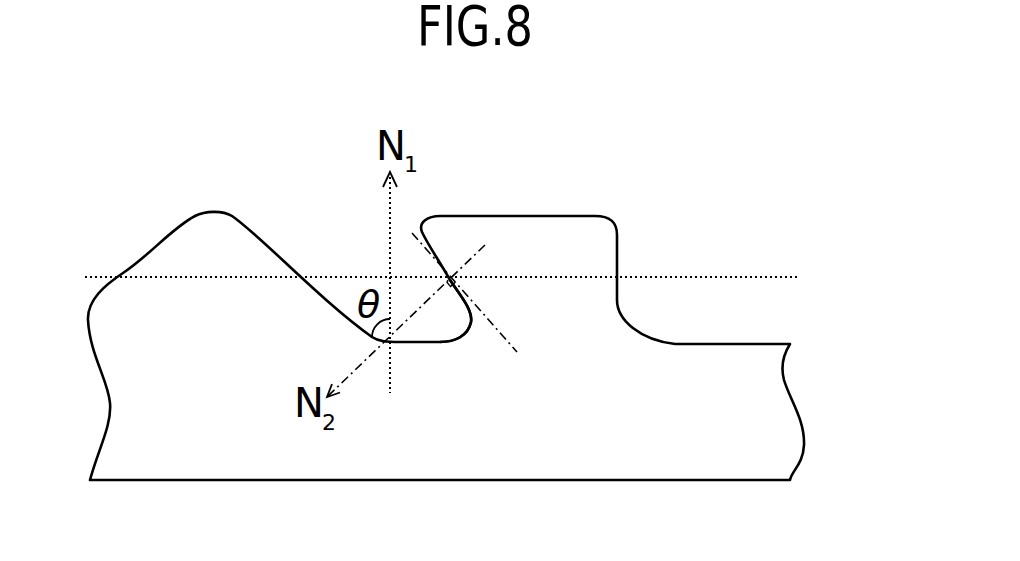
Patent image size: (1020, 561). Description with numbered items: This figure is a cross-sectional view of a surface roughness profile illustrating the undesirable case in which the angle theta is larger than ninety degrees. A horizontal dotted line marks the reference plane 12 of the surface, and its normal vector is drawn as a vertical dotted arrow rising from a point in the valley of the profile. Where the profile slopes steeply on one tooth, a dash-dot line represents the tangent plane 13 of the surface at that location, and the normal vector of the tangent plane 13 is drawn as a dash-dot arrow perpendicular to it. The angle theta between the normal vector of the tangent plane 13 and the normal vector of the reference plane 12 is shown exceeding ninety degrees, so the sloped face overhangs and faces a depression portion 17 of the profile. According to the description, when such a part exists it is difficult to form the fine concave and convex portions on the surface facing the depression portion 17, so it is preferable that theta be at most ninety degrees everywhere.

The reference plane 12 is at (775, 280).
The tangent plane 13 is at (493, 308).
The depression portion 17 is at (462, 318).